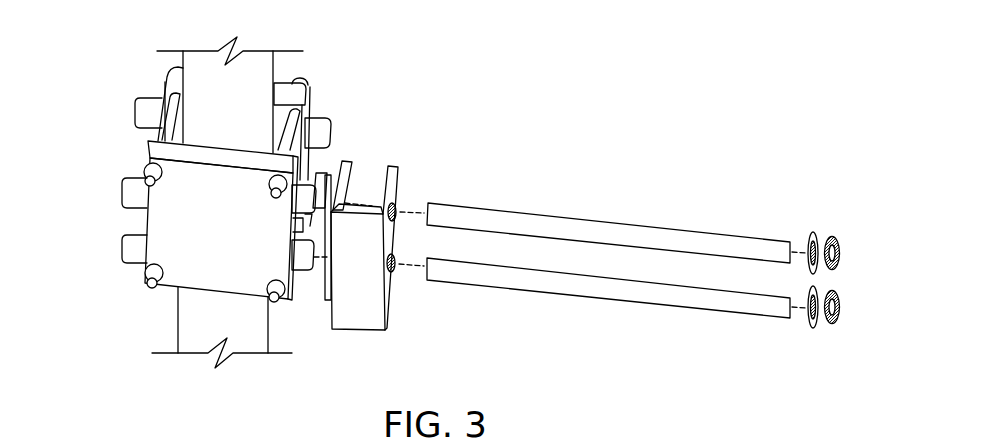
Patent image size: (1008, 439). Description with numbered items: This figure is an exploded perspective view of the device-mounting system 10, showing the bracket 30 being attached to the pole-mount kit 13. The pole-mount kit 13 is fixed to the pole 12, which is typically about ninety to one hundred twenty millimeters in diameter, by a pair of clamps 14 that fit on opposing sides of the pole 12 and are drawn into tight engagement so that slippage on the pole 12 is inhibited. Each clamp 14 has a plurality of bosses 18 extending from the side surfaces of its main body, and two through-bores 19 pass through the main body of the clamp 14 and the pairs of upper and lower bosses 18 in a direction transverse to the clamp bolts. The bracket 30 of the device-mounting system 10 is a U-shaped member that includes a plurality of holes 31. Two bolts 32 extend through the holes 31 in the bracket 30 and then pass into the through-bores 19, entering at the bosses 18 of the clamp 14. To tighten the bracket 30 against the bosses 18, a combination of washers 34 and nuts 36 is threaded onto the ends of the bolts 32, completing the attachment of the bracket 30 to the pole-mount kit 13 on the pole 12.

The device-mounting system 10 is at (509, 101).
The pole 12 is at (253, 76).
The pole-mount kit 13 is at (144, 292).
The clamp 14 is at (285, 95).
The boss 18 is at (314, 125).
The through-bore 19 is at (116, 193).
The bracket 30 is at (365, 308).
The hole 31 is at (398, 184).
The bolt 32 is at (608, 223).
The washer 34 is at (812, 330).
The nut 36 is at (840, 313).